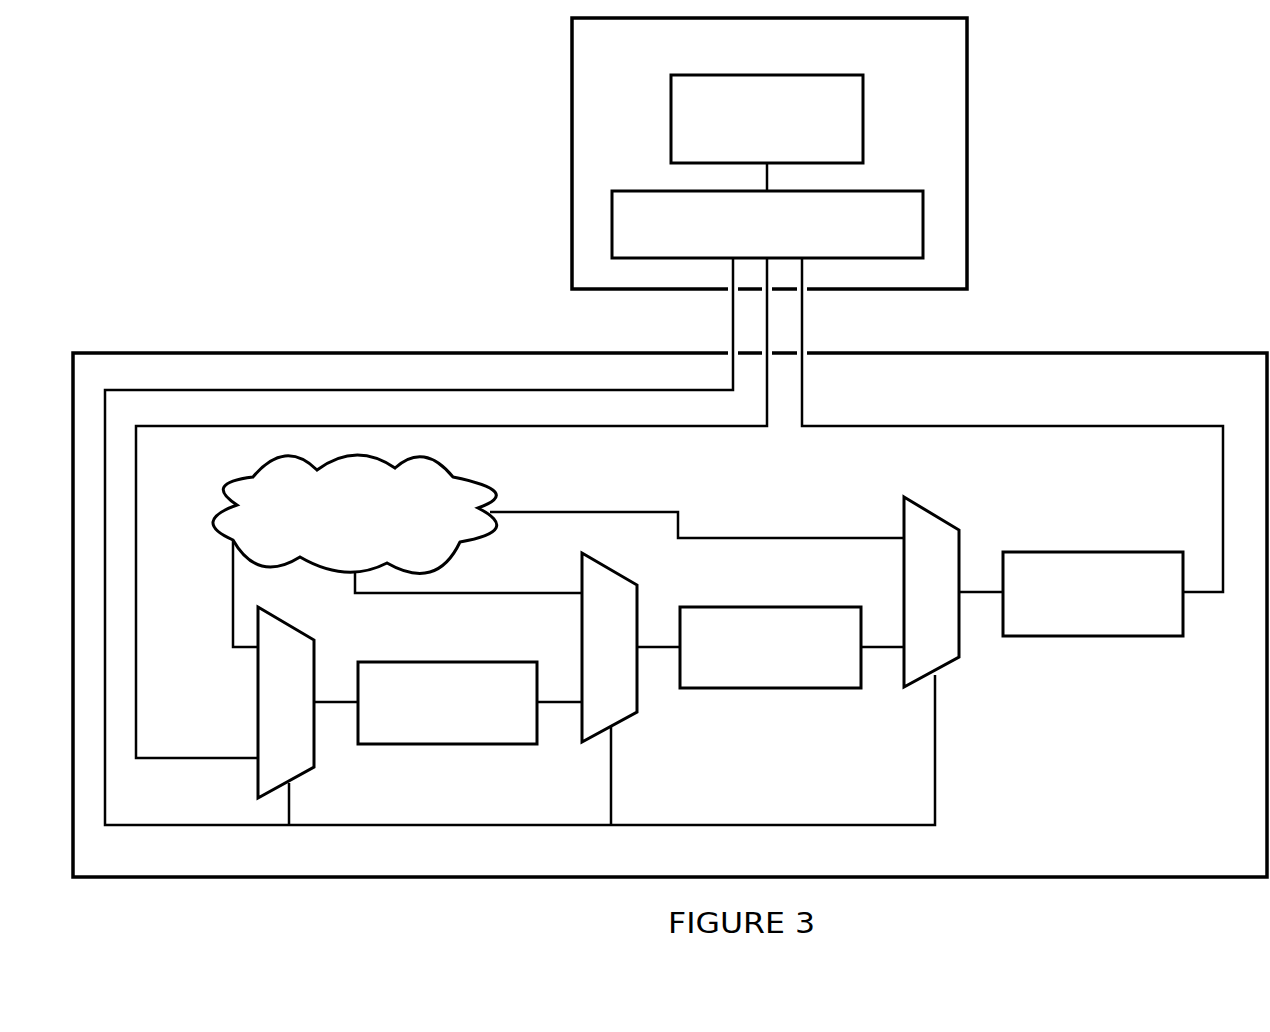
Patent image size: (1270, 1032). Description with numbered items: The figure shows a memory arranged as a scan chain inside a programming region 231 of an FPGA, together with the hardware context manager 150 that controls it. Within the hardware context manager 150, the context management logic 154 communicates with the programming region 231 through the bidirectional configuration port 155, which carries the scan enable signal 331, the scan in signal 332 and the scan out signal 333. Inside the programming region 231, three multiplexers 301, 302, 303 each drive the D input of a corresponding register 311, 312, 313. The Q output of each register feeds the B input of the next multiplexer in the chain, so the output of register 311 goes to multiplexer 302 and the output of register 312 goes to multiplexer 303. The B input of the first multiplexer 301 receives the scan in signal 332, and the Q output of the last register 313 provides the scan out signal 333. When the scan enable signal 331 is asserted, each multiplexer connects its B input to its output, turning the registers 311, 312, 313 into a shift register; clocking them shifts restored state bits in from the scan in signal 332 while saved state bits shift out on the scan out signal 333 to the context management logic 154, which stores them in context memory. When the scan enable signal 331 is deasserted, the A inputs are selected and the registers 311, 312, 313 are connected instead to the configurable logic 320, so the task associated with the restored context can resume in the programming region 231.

The hardware context manager 150 is at (910, 57).
The context management logic 154 is at (787, 157).
The bidirectional configuration port 155 is at (786, 249).
The programming region 231 is at (782, 866).
The configurable logic 320 is at (558, 551).
The multiplexer 301 is at (303, 712).
The multiplexer 302 is at (625, 661).
The multiplexer 303 is at (948, 604).
The register 311 is at (463, 726).
The register 312 is at (787, 674).
The register 313 is at (1108, 619).
The scan enable signal 331 is at (520, 541).
The scan in signal 332 is at (451, 508).
The scan out signal 333 is at (1012, 425).